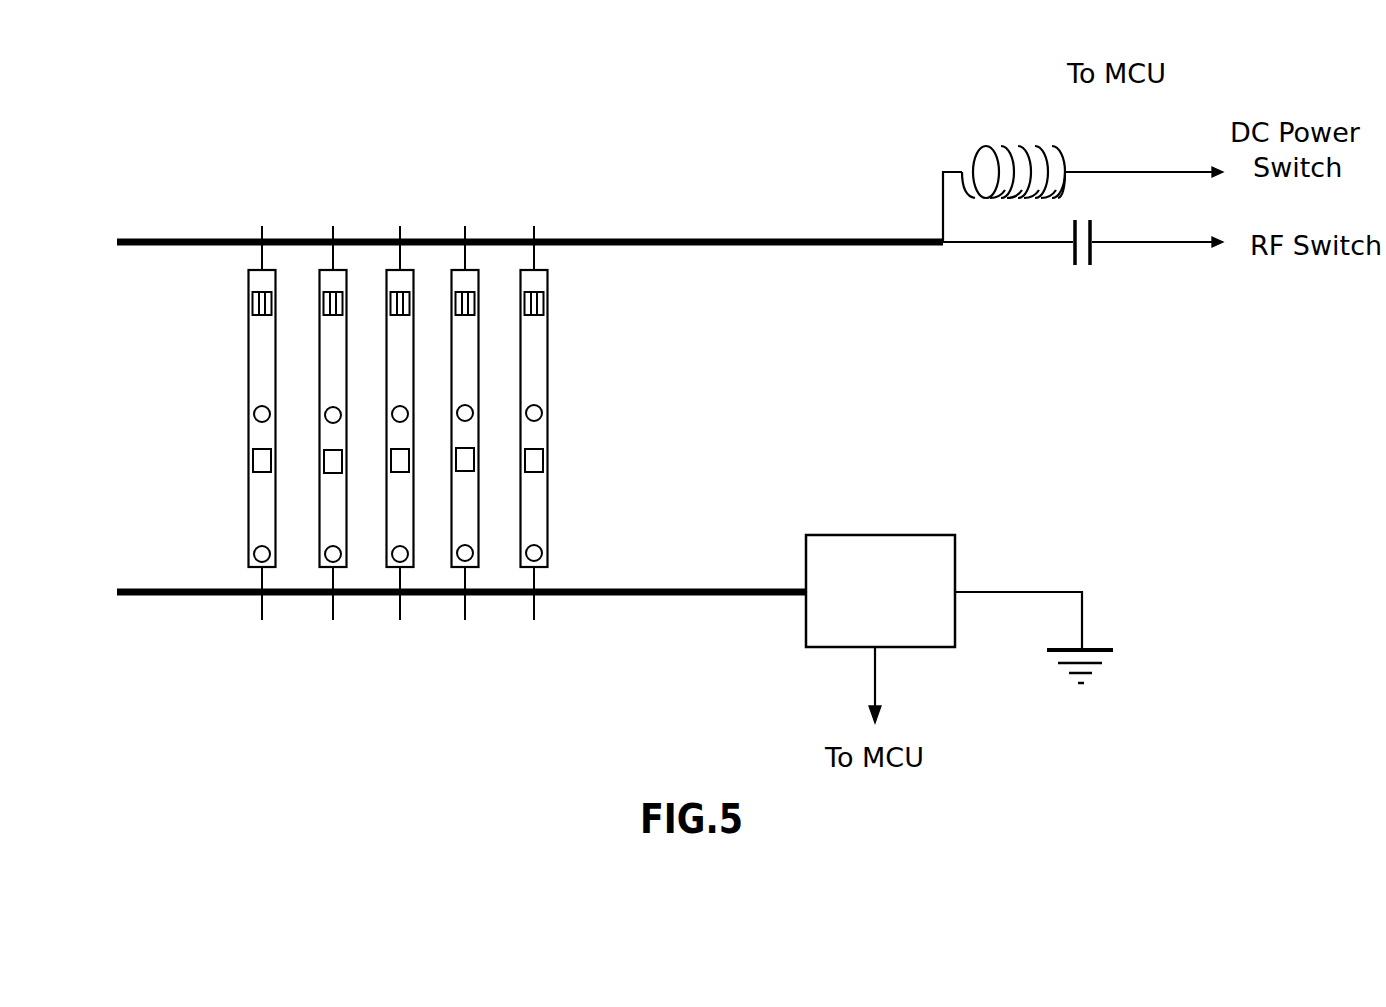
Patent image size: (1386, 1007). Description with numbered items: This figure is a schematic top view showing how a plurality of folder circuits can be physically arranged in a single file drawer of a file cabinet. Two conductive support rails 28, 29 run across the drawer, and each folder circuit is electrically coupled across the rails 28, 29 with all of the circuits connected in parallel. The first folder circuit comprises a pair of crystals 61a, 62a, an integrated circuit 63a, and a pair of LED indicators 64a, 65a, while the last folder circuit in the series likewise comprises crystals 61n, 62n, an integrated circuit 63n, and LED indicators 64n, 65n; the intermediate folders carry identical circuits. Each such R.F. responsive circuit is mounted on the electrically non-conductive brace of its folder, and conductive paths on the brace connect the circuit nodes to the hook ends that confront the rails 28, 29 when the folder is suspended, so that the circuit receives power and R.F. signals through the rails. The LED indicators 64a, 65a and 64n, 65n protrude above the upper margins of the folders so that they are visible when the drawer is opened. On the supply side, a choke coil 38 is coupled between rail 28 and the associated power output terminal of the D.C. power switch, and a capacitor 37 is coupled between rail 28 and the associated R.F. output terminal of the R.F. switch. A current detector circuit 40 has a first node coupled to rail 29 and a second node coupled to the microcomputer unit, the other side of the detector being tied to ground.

The rail 28 is at (437, 240).
The rail 29 is at (443, 597).
The crystal 61a is at (257, 300).
The crystal 62a is at (265, 318).
The integrated circuit 63a is at (258, 461).
The LED indicator 64a is at (256, 415).
The LED indicator 65a is at (262, 555).
The crystal 61n is at (522, 296).
The crystal 62n is at (545, 300).
The integrated circuit 63n is at (545, 463).
The LED indicator 64n is at (541, 413).
The LED indicator 65n is at (541, 551).
The capacitor 37 is at (1082, 275).
The choke coil 38 is at (1022, 170).
The current detector circuit 40 is at (910, 545).